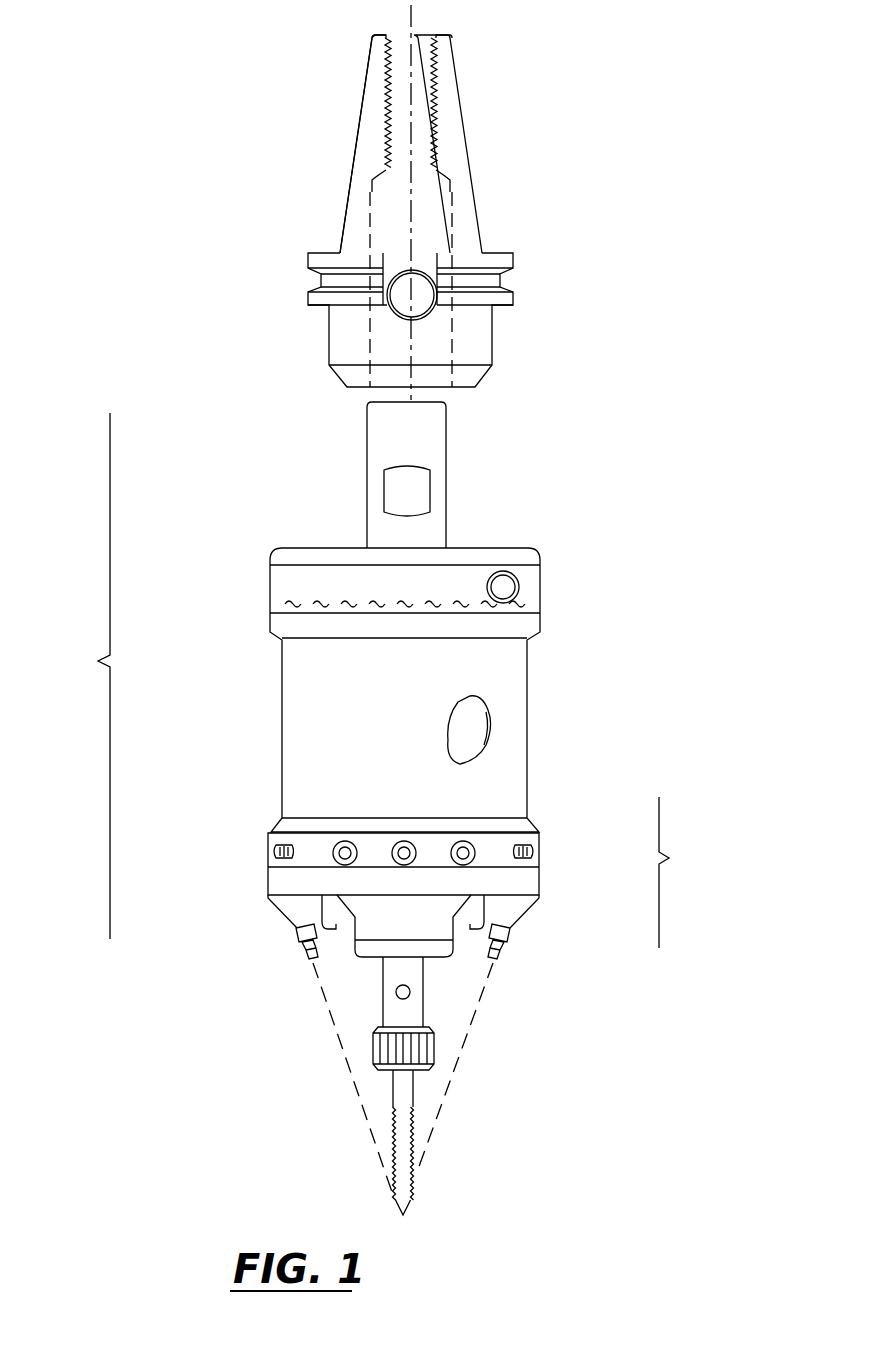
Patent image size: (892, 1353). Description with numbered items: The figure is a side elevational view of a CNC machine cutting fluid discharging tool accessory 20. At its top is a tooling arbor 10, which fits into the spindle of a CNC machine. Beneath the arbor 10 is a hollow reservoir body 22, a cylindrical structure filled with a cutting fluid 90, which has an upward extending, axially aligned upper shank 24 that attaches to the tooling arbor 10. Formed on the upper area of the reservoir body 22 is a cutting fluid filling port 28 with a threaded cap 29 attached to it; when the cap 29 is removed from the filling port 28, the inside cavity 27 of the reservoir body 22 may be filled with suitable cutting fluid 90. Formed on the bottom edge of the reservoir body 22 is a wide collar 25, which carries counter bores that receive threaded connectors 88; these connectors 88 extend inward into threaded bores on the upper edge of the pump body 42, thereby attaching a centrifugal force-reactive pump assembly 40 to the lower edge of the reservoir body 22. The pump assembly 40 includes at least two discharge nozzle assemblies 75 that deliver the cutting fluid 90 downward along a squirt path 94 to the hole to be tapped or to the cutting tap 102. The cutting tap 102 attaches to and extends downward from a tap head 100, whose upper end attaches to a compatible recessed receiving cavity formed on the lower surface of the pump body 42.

The tooling arbor 10 is at (357, 136).
The cutting fluid discharge tool accessory 20 is at (72, 676).
The reservoir body 22 is at (448, 670).
The upper shank 24 is at (367, 455).
The wide collar 25 is at (270, 840).
The inside cavity 27 is at (470, 724).
The cutting fluid filling port 28 is at (586, 592).
The threaded cap 29 is at (520, 592).
The pump assembly 40 is at (687, 872).
The pump body 42 is at (378, 866).
The discharge nozzle assemblies 75 is at (270, 937).
The threaded connectors 88 is at (531, 840).
The cutting fluid 90 is at (290, 601).
The squirt path 94 is at (345, 1075).
The tap head 100 is at (423, 980).
The cutting tap 102 is at (410, 1207).